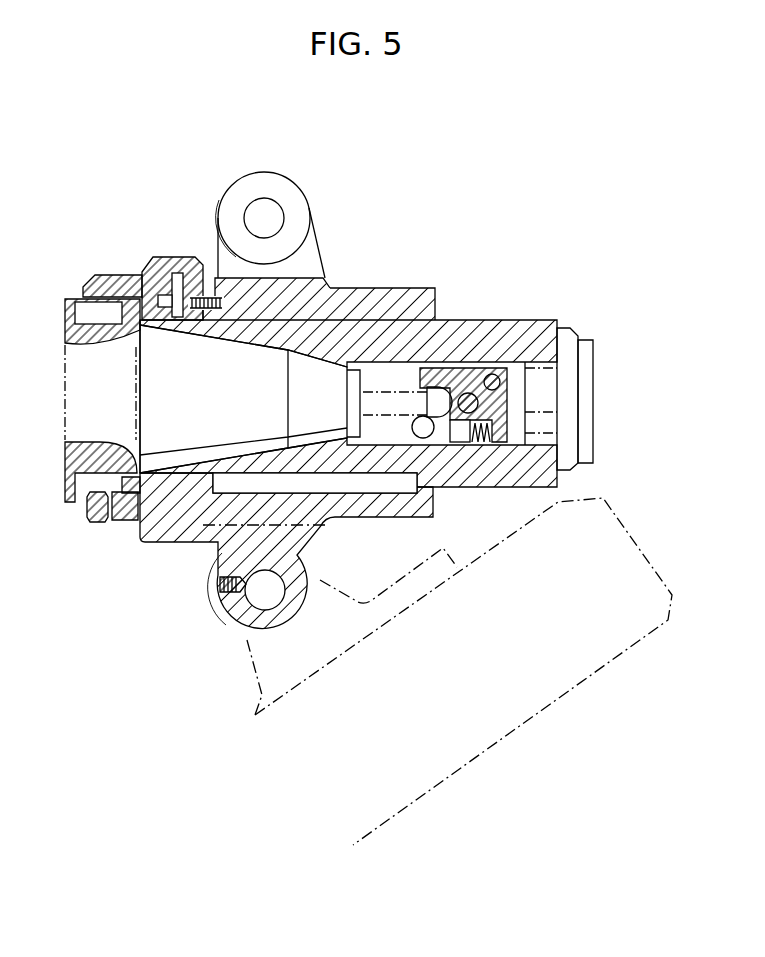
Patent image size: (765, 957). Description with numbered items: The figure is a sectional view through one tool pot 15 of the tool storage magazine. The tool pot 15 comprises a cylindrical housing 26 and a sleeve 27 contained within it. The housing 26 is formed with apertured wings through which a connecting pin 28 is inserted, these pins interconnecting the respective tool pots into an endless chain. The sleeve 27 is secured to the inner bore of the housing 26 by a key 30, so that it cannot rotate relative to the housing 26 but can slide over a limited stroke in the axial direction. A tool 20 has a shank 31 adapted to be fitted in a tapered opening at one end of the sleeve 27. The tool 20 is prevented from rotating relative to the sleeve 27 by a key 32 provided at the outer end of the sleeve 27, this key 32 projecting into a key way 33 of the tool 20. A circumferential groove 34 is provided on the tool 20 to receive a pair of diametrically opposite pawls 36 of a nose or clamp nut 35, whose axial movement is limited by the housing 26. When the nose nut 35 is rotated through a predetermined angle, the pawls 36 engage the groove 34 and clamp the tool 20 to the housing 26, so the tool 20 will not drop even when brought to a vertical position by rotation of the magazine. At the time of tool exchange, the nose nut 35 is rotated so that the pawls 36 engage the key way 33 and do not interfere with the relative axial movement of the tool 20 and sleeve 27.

The tool pot 15 is at (318, 283).
The tool 20 is at (73, 462).
The cylindrical housing 26 is at (366, 297).
The sleeve 27 is at (462, 323).
The connecting pin 28 is at (267, 206).
The key 30 is at (405, 488).
The shank 31 is at (160, 457).
The key 32 is at (127, 493).
The key way 33 is at (132, 498).
The circumferential groove 34 is at (92, 503).
The nose nut 35 is at (198, 550).
The pawls 36 is at (102, 517).